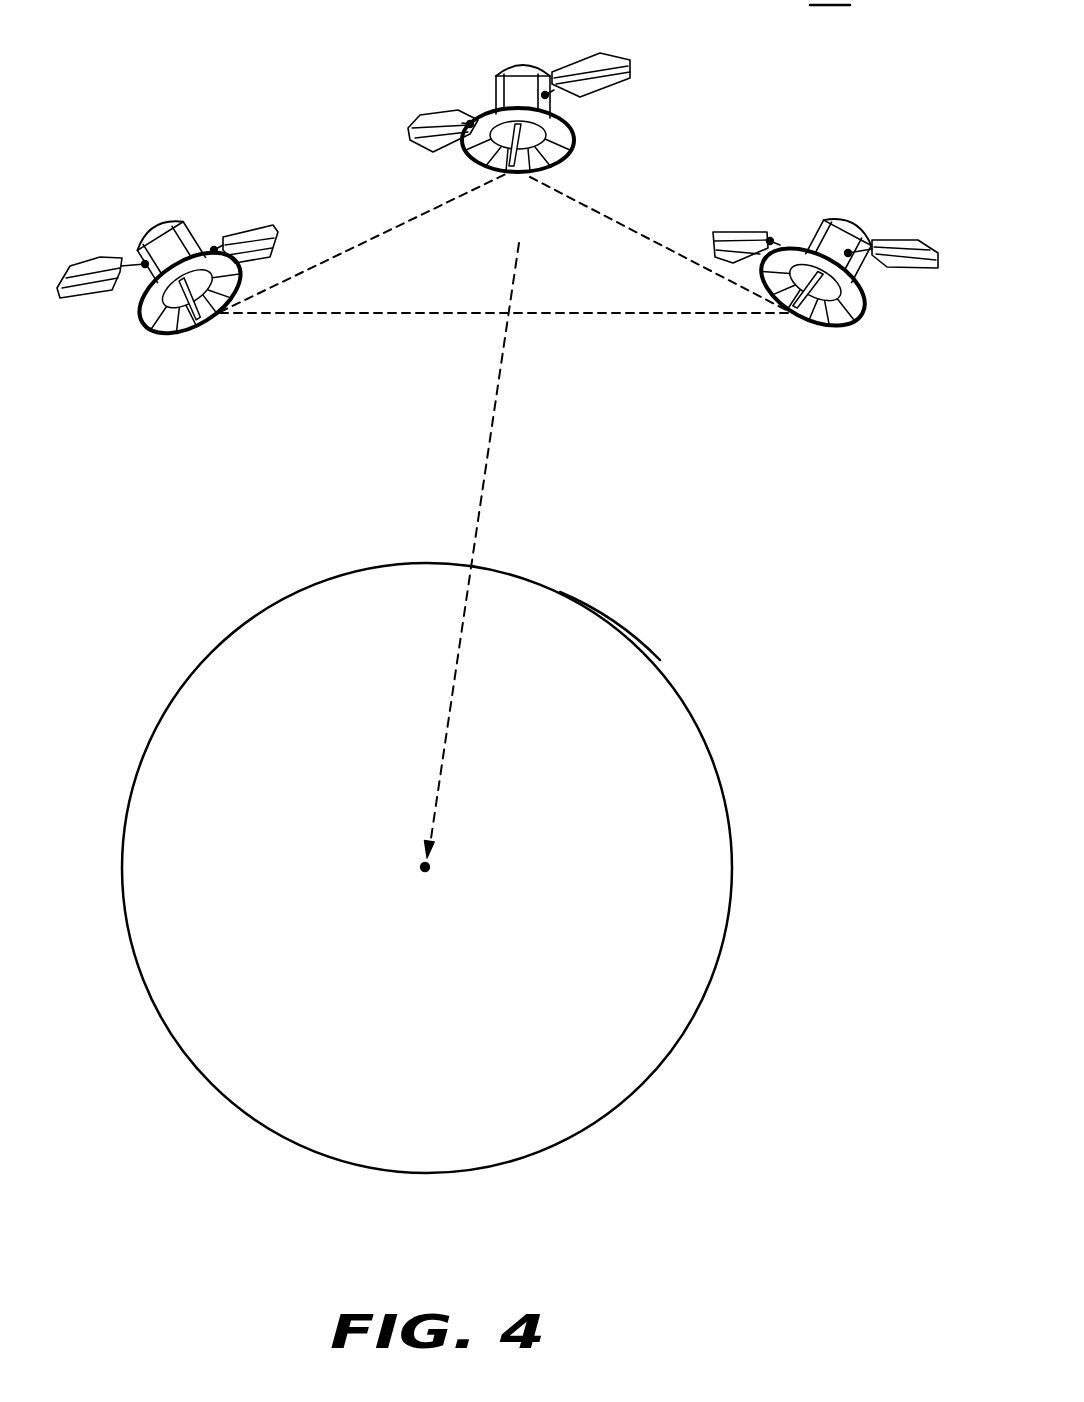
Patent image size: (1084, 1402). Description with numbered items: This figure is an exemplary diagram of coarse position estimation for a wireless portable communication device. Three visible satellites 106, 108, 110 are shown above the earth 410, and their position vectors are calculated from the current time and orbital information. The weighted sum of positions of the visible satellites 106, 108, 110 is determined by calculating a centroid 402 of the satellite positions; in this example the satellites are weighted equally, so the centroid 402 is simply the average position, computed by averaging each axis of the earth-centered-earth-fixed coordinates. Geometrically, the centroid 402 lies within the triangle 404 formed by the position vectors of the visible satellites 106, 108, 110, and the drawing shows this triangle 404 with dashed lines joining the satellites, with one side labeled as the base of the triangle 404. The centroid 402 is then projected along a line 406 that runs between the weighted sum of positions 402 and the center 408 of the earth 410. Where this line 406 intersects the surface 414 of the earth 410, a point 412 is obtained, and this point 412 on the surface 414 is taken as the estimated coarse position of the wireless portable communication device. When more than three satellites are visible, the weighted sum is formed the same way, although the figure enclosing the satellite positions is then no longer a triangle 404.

The visible satellite 106 is at (150, 234).
The visible satellite 108 is at (520, 68).
The visible satellite 110 is at (842, 224).
The centroid of satellite positions 402 is at (532, 233).
The triangle 404 is at (635, 316).
The line 406 is at (489, 458).
The center of the earth 408 is at (430, 866).
The earth 410 is at (413, 1152).
The point on the surface of the earth 412 is at (505, 556).
The surface of the earth 414 is at (620, 625).